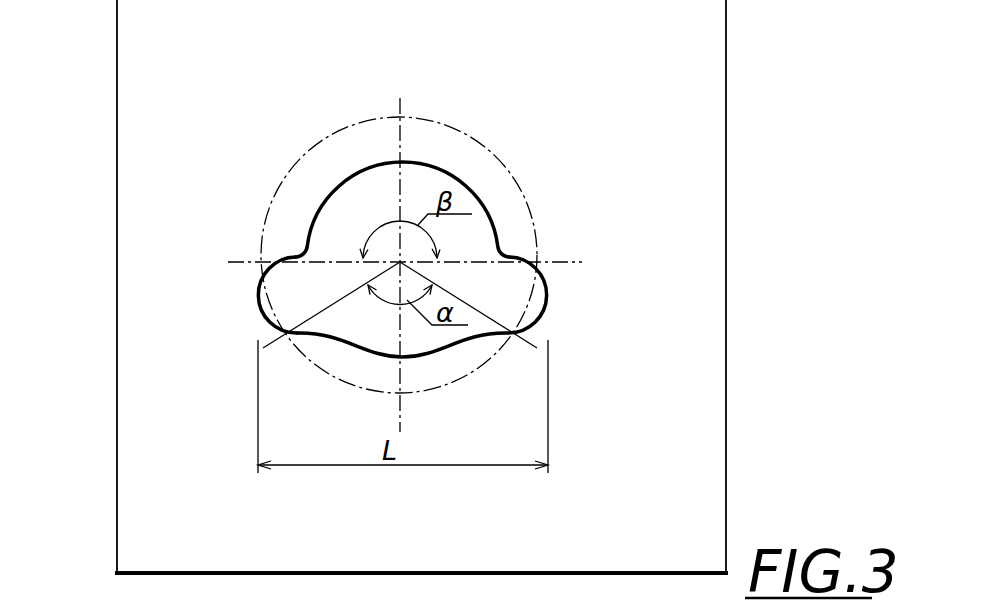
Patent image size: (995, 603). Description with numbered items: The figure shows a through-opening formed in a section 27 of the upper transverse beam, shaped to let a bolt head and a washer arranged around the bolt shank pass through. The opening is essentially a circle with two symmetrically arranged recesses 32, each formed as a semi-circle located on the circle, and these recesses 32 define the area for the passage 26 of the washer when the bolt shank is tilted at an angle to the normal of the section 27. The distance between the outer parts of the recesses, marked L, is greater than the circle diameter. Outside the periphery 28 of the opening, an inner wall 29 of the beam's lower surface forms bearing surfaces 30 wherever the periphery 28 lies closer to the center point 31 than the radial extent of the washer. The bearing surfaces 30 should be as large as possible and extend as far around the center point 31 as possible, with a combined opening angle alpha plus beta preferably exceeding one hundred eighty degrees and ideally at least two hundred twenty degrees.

The area for the passage of a washer 26 is at (522, 295).
The section of the beam 27 is at (668, 79).
The periphery of the through-opening 28 is at (477, 190).
The inner wall 29 is at (668, 472).
The bearing surfaces 30 is at (423, 135).
The center point of the through-opening 31 is at (393, 256).
The recesses 32 is at (277, 299).